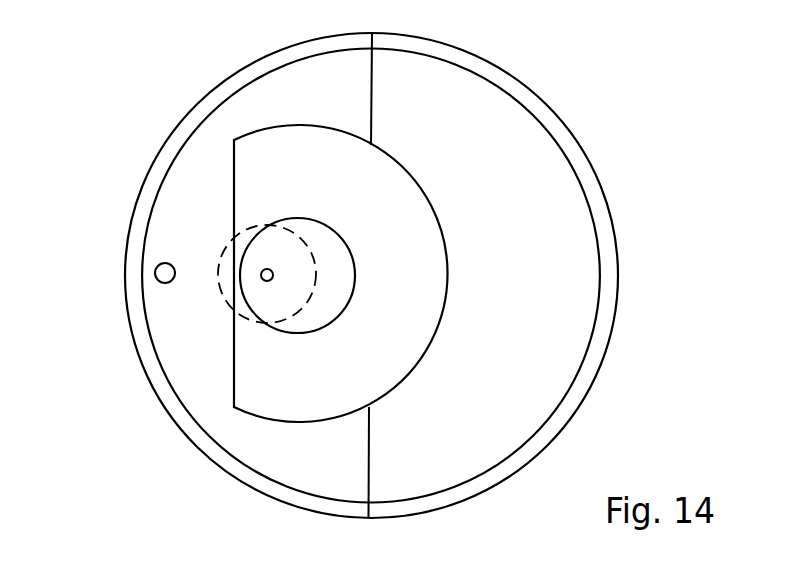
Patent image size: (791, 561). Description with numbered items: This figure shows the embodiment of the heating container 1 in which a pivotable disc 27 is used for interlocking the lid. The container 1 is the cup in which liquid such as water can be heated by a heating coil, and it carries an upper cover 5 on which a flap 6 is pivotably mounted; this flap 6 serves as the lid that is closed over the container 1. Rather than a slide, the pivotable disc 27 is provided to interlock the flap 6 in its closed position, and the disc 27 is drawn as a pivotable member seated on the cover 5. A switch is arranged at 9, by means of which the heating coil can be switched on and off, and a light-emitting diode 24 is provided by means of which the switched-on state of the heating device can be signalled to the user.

The container 1 is at (574, 110).
The upper cover 5 is at (247, 107).
The flap 6 is at (535, 365).
The pivotable disc 27 is at (253, 208).
The light-emitting diode 24 is at (163, 272).
The switch 9 is at (265, 277).